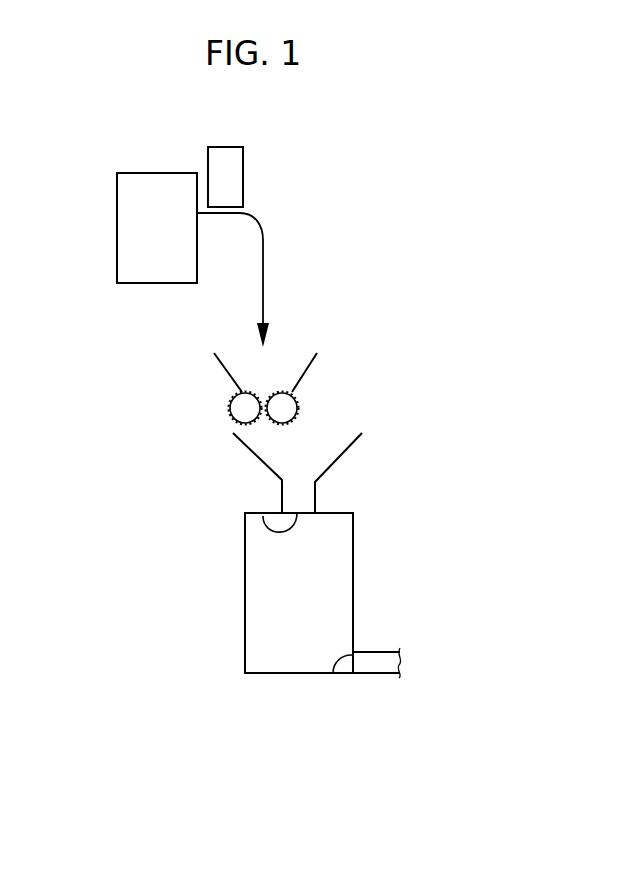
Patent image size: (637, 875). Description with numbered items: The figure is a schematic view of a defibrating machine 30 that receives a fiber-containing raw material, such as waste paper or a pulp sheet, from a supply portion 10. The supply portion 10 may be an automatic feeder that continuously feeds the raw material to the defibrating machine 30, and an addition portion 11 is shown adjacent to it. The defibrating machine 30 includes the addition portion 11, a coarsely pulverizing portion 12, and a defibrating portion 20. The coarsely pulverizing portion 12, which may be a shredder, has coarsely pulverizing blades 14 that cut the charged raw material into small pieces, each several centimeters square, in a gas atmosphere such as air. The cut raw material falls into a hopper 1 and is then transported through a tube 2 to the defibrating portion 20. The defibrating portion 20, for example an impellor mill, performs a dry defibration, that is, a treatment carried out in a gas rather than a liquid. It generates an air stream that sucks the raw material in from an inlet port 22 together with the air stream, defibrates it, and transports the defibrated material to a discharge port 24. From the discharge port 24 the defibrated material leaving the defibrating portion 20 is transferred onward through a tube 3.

The hopper 1 is at (253, 453).
The tube 2 is at (281, 497).
The tube 3 is at (372, 663).
The supply portion 10 is at (106, 170).
The addition portion 11 is at (221, 162).
The coarsely pulverizing portion 12 is at (225, 376).
The coarsely pulverizing blades 14 is at (247, 410).
The defibrating portion 20 is at (235, 682).
The inlet port 22 is at (264, 524).
The discharge port 24 is at (335, 674).
The defibrating machine 30 is at (395, 236).